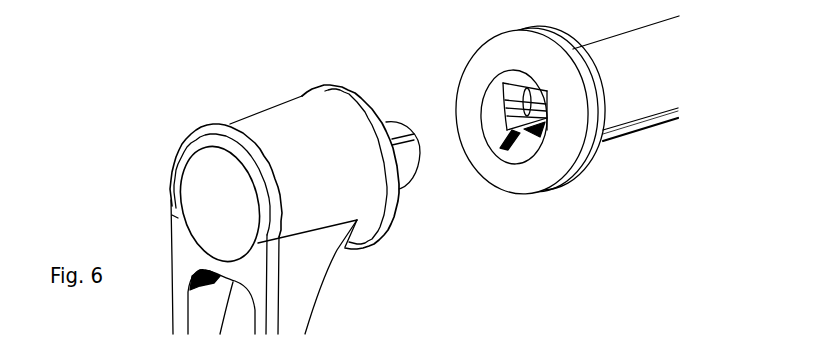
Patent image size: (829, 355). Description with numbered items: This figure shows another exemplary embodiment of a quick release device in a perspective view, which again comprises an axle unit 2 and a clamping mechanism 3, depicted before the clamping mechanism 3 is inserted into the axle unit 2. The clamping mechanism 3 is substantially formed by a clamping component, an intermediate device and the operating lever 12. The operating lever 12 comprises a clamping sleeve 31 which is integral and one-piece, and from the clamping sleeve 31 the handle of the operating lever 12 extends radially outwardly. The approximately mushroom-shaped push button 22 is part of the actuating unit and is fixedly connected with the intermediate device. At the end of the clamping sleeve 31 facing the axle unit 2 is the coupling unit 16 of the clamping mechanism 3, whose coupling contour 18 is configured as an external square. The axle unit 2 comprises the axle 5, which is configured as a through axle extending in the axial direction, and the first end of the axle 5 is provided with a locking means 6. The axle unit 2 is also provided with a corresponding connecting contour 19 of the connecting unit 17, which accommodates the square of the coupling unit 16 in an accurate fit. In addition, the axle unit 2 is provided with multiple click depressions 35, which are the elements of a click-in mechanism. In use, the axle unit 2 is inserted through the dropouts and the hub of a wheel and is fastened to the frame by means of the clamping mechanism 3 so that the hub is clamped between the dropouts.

The axle unit 2 is at (552, 147).
The clamping mechanism 3 is at (283, 189).
The axle 5 is at (633, 100).
The locking means 6 is at (533, 183).
The operating lever 12 is at (177, 278).
The coupling unit 16 is at (405, 129).
The connecting unit 17 is at (497, 104).
The coupling contour 18 is at (425, 199).
The connecting contour 19 is at (540, 110).
The push button 22 is at (196, 184).
The clamping sleeve 31 is at (248, 115).
The click depressions 35 is at (492, 88).